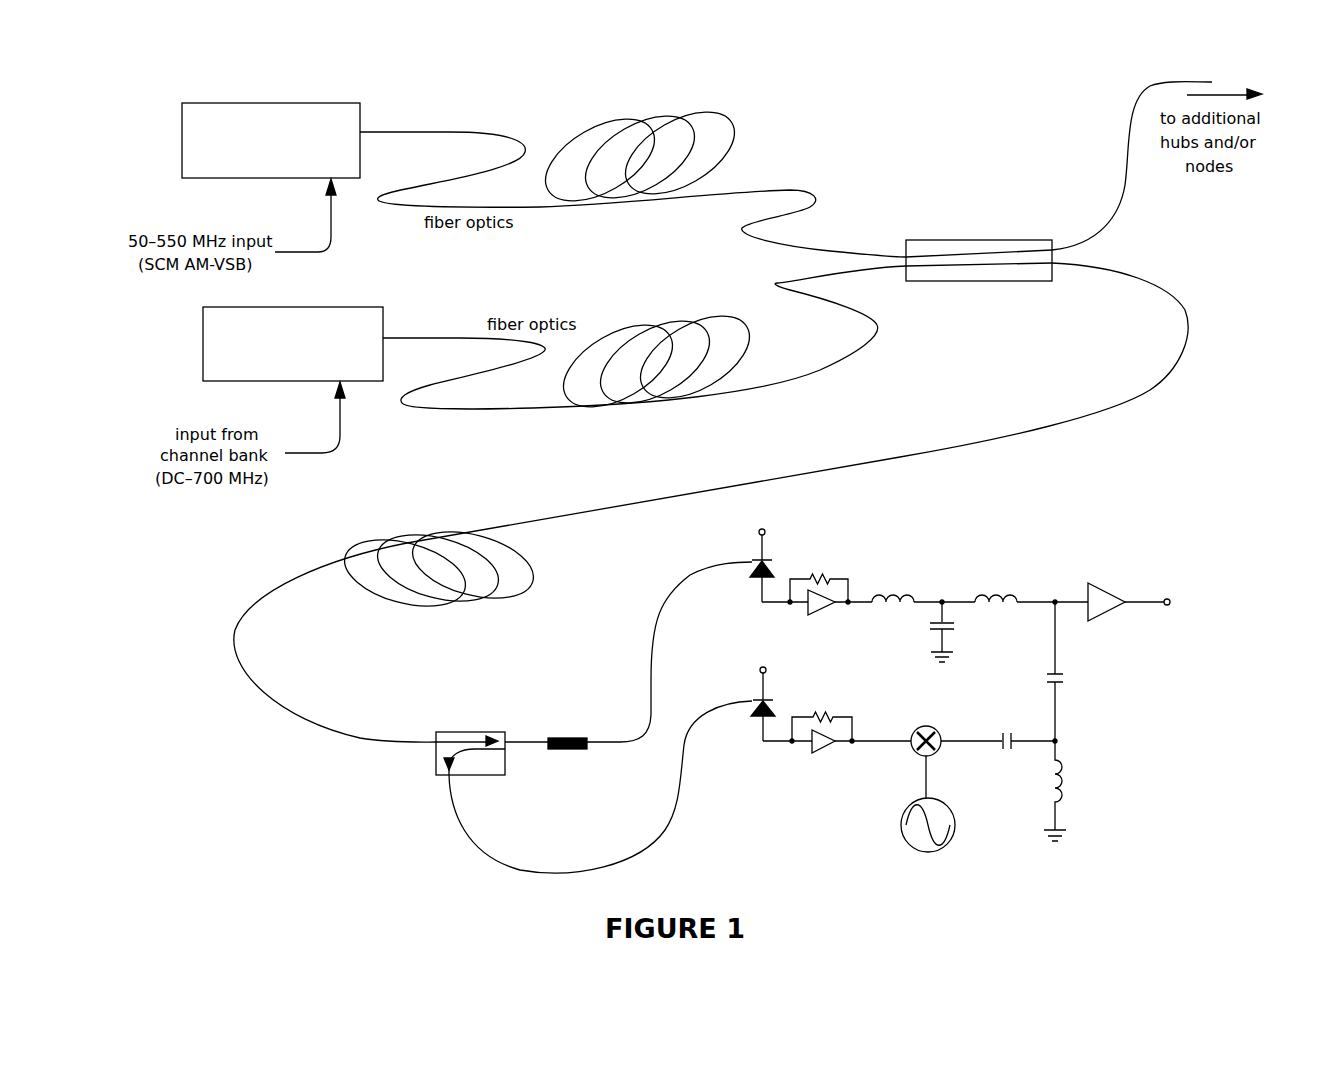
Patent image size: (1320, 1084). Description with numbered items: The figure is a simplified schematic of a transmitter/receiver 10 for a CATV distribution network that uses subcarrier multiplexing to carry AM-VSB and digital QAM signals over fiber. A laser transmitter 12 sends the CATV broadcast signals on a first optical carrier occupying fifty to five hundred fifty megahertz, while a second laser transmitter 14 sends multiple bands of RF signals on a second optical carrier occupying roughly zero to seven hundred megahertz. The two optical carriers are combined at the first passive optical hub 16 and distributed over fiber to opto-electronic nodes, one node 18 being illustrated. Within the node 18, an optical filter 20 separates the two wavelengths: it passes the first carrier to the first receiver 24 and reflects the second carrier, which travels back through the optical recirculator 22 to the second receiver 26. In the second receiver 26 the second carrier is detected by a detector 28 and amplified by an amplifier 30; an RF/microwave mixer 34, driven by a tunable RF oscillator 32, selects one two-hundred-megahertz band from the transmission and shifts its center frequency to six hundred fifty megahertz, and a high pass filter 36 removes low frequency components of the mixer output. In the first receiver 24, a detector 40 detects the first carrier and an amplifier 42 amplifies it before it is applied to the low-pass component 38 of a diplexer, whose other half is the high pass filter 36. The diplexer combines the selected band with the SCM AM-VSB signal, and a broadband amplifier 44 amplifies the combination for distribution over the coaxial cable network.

The transmitter/receiver 10 is at (323, 820).
The laser transmitter 12 is at (245, 105).
The second laser transmitter 14 is at (283, 311).
The first passive optical hub 16 is at (905, 243).
The opto-electronic node 18 is at (1075, 473).
The optical filter 20 is at (566, 738).
The optical recirculator 22 is at (500, 777).
The first receiver 24 is at (775, 598).
The second receiver 26 is at (833, 773).
The detector 28 is at (753, 718).
The amplifier 30 is at (816, 752).
The tunable RF oscillator 32 is at (901, 835).
The RF/microwave mixer 34 is at (927, 725).
The high pass filter 36 is at (1122, 741).
The low-pass component 38 is at (984, 625).
The detector 40 is at (752, 576).
The amplifier 42 is at (813, 613).
The broadband amplifier 44 is at (1107, 610).